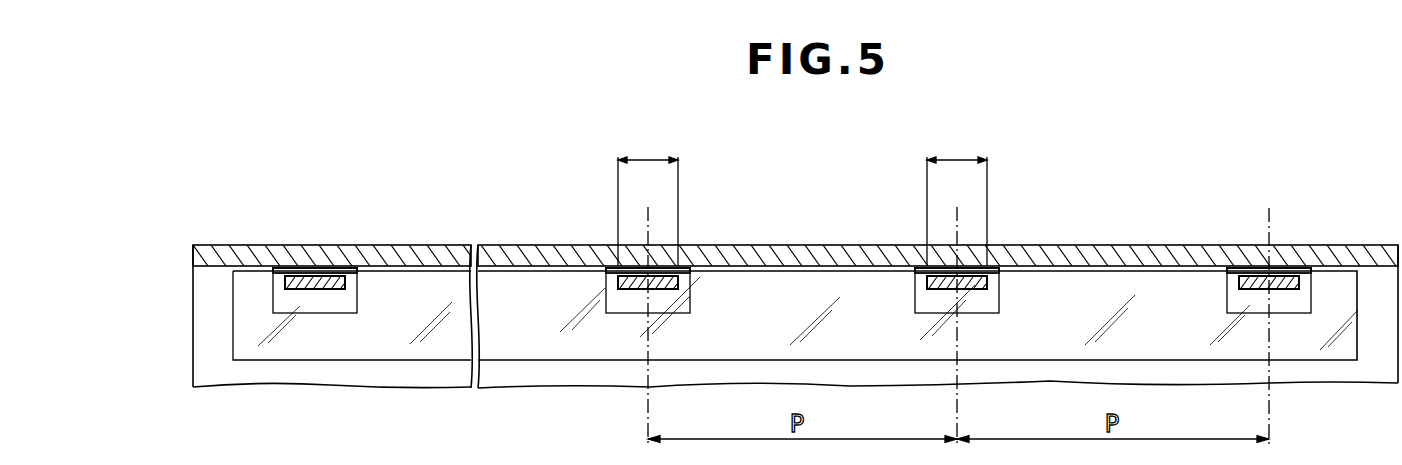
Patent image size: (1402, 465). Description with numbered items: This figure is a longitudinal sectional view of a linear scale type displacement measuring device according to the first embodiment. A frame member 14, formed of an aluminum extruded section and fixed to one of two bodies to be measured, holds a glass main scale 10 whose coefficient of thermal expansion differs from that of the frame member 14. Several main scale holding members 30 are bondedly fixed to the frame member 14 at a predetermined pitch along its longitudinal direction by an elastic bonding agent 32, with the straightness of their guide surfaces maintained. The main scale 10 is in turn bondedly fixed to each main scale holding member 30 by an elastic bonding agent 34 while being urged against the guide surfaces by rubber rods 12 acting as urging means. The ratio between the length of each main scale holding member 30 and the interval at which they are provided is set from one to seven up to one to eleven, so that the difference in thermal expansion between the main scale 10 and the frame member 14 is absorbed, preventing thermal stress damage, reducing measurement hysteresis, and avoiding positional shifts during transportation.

The main scale 10 is at (1347, 340).
The rubber rod 12 is at (338, 289).
The frame member 14 is at (1097, 245).
The main scale holding member 30 is at (343, 314).
The elastic bonding agent 32 is at (307, 263).
The elastic bonding agent 34 is at (350, 280).